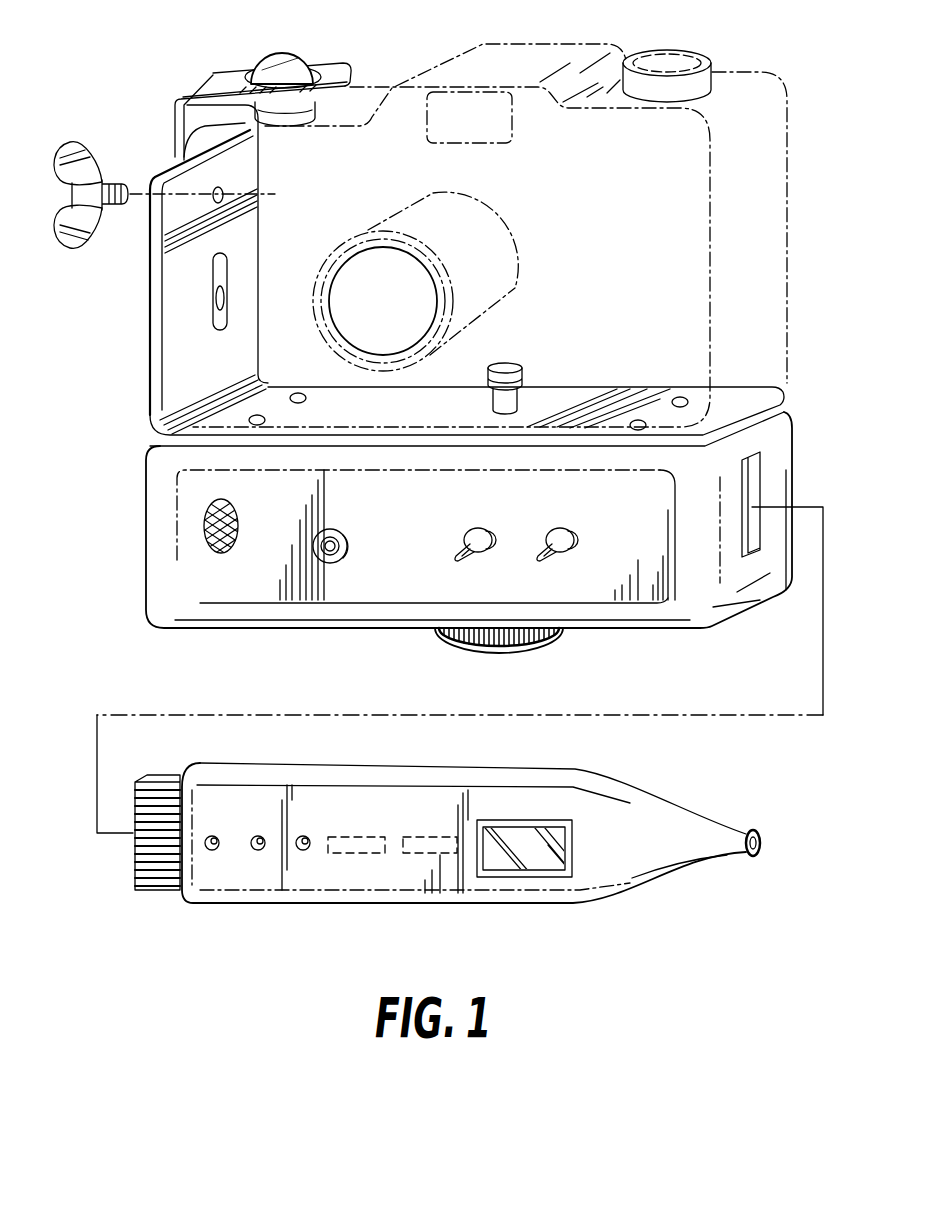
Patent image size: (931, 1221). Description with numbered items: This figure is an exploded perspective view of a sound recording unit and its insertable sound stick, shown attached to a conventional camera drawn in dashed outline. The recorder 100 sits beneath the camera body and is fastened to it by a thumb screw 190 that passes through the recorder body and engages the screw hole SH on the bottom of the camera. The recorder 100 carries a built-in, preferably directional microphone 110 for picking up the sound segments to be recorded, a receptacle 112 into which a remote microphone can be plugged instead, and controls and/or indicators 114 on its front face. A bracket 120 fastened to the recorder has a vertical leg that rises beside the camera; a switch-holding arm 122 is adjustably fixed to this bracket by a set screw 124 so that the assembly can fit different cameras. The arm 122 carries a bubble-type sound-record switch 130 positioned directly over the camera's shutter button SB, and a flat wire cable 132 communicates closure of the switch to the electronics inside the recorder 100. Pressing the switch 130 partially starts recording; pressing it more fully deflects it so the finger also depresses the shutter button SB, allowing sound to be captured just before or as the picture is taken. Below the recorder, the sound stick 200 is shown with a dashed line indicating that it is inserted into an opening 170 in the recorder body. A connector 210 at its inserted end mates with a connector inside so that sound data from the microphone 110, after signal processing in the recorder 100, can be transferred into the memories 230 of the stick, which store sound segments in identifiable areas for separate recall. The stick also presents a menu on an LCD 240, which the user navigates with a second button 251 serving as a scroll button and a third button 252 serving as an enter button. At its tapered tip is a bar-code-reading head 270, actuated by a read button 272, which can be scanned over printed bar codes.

The recorder 100 is at (160, 574).
The microphone 110 is at (242, 517).
The receptacle 112 is at (350, 531).
The controls and/or indicators 114 is at (573, 537).
The bracket 120 is at (243, 233).
The switch-holding arm 122 is at (173, 132).
The set screw 124 is at (82, 242).
The sound-record switch 130 is at (290, 55).
The wire cable 132 is at (217, 87).
The shutter button SB is at (300, 135).
The screw hole SH is at (513, 363).
The opening 170 is at (752, 477).
The thumb screw 190 is at (437, 643).
The sound stick 200 is at (208, 773).
The connector 210 is at (133, 860).
The memories 230 is at (418, 853).
The LCD 240 is at (513, 870).
The second button 251 is at (257, 850).
The third button 252 is at (207, 850).
The read button 272 is at (305, 853).
The bar-code-reading head 270 is at (763, 847).